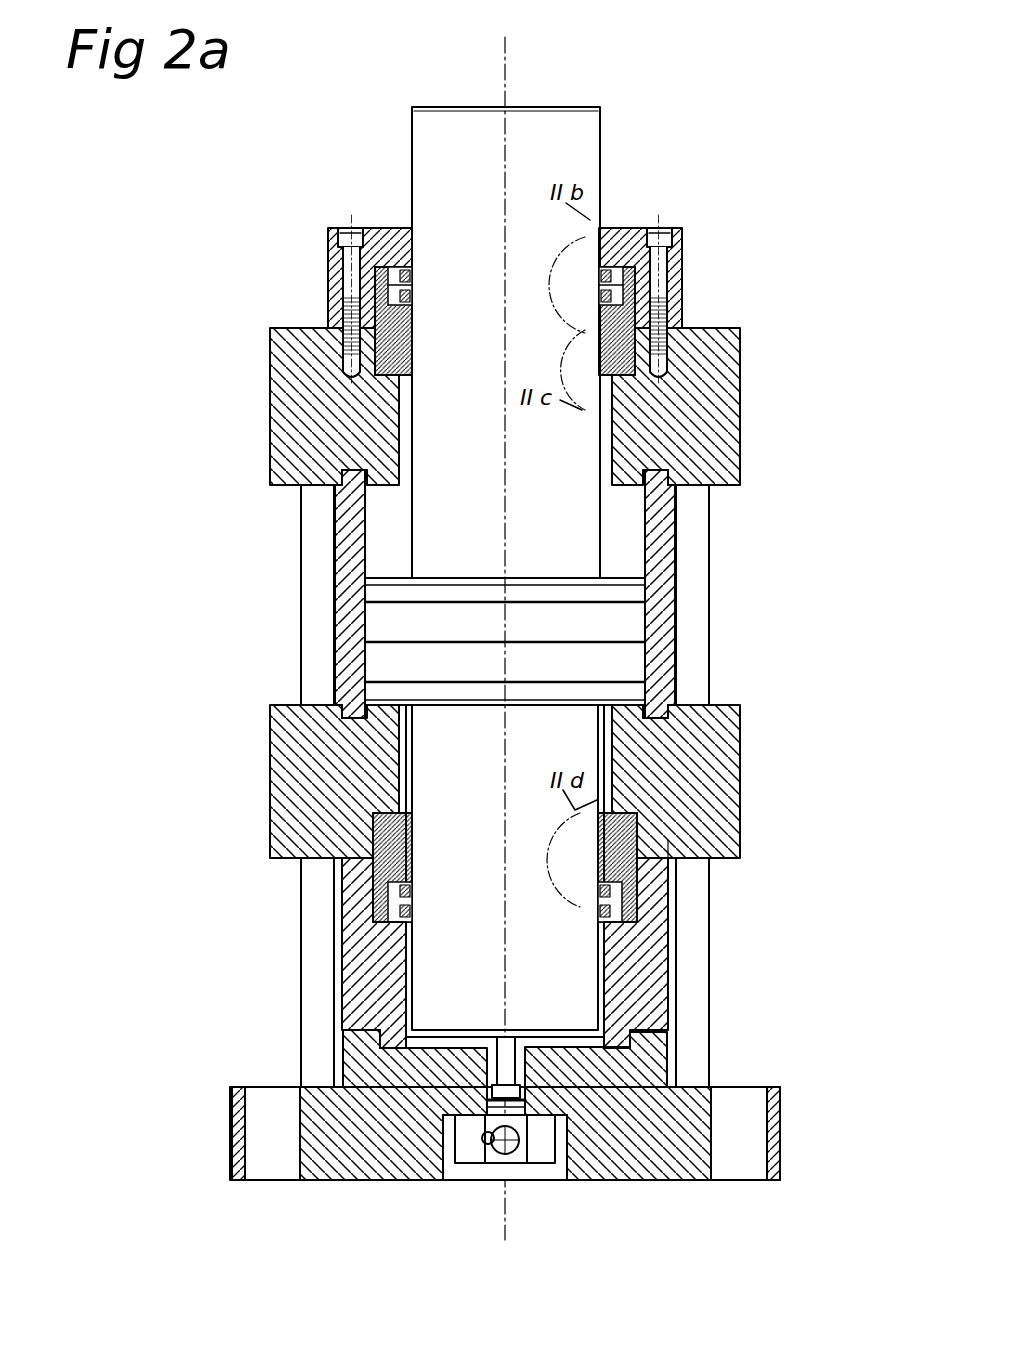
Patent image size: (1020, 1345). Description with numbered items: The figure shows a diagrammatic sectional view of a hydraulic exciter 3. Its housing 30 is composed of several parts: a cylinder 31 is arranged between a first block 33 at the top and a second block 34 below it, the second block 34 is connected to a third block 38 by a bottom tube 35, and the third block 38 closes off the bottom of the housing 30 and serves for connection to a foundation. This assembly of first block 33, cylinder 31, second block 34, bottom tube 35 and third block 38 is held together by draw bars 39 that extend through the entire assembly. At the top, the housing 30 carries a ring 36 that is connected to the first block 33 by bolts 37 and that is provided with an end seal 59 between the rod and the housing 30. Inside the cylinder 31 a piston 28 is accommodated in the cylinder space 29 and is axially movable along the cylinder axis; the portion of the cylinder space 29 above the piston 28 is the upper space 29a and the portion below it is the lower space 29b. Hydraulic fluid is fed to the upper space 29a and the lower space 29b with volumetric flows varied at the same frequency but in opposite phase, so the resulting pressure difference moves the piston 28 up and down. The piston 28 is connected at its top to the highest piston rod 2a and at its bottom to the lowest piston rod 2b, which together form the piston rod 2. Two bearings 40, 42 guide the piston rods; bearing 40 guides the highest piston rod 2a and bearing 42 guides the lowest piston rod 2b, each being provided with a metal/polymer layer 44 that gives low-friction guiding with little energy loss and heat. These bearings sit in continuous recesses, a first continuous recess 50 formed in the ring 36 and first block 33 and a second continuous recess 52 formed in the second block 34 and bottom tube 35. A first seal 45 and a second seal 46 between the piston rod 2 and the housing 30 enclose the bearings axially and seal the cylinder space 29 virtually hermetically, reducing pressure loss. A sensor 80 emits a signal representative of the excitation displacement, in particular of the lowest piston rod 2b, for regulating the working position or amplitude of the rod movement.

The piston rod 2 is at (426, 533).
The highest piston rod 2a is at (453, 135).
The lowest piston rod 2b is at (452, 764).
The hydraulic exciter 3 is at (199, 286).
The piston 28 is at (614, 618).
The cylinder space 29 is at (704, 594).
The upper space 29a is at (616, 503).
The lower space 29b is at (610, 710).
The housing 30 is at (436, 406).
The cylinder 31 is at (342, 557).
The first block 33 is at (318, 401).
The second block 34 is at (300, 740).
The bottom tube 35 is at (356, 928).
The ring 36 is at (322, 268).
The bolts 37 is at (344, 228).
The third block 38 is at (336, 1153).
The draw bars 39 is at (305, 503).
The bearing 40 is at (576, 331).
The bearing 42 is at (640, 890).
The metal/polymer layer 44 is at (596, 356).
The first seal 45 is at (580, 290).
The second seal 46 is at (583, 908).
The first continuous recess 50 is at (615, 396).
The second continuous recess 52 is at (670, 847).
The end seal 59 is at (603, 222).
The sensor 80 is at (507, 1155).